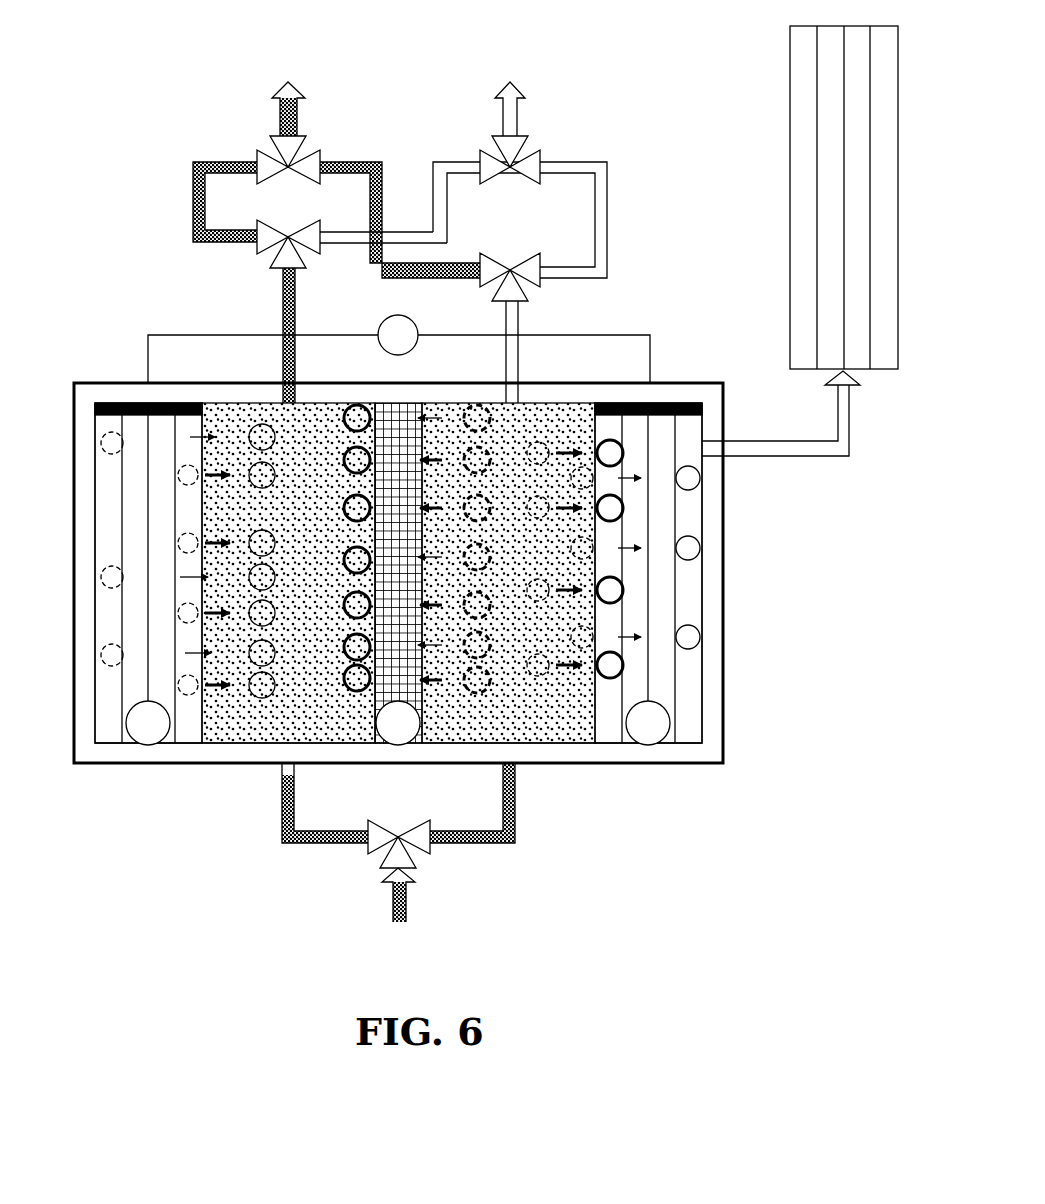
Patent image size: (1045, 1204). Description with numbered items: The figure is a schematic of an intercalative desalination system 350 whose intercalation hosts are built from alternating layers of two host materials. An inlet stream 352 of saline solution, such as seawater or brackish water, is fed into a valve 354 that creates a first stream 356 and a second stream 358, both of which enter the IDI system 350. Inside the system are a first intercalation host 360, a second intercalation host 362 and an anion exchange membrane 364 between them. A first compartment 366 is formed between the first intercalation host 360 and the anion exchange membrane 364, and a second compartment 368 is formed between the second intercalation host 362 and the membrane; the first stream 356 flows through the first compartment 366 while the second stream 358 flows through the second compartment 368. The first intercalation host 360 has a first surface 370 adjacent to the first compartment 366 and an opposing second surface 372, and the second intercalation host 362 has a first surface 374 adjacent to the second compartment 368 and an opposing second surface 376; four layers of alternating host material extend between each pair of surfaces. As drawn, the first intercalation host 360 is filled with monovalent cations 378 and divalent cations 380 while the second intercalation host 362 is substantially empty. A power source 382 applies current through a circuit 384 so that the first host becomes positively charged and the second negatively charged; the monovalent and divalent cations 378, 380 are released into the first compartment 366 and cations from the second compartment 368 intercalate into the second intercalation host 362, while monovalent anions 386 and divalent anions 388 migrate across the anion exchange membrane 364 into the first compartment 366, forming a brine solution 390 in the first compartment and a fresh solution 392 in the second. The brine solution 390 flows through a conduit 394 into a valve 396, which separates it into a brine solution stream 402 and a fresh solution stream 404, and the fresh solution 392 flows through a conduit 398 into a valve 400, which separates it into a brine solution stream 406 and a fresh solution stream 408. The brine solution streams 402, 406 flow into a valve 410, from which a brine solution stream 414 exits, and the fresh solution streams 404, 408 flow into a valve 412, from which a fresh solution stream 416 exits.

The intercalative desalination (IDI) system 350 is at (128, 788).
The inlet stream 352 is at (393, 900).
The valve 354 is at (368, 848).
The first stream 356 is at (282, 800).
The second stream 358 is at (515, 785).
The first intercalation host 360 is at (130, 736).
The second intercalation host 362 is at (630, 736).
The anion exchange membrane 364 is at (380, 736).
The first compartment 366 is at (268, 732).
The second compartment 368 is at (491, 732).
The first surface 370 is at (205, 745).
The second surface 372 is at (95, 690).
The first surface 374 is at (790, 192).
The second surface 376 is at (898, 192).
The monovalent cations 378 is at (186, 464).
The divalent cations 380 is at (103, 575).
The power source 382 is at (382, 347).
The circuit 384 is at (205, 335).
The monovalent anions 386 is at (488, 450).
The divalent anions 388 is at (476, 403).
The brine solution 390 is at (283, 432).
The fresh solution 392 is at (528, 432).
The conduit 394 is at (296, 320).
The valve 396 is at (257, 250).
The conduit 398 is at (505, 325).
The valve 400 is at (543, 282).
The brine solution stream 402 is at (193, 205).
The fresh solution stream 404 is at (458, 160).
The brine solution stream 406 is at (452, 262).
The fresh solution stream 408 is at (607, 218).
The valve 410 is at (257, 160).
The valve 412 is at (519, 132).
The brine solution stream 414 is at (280, 105).
The fresh solution stream 416 is at (503, 105).